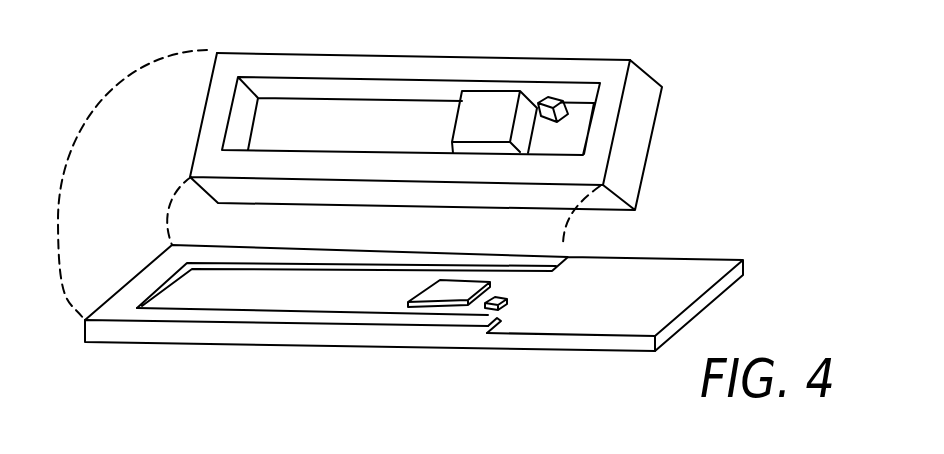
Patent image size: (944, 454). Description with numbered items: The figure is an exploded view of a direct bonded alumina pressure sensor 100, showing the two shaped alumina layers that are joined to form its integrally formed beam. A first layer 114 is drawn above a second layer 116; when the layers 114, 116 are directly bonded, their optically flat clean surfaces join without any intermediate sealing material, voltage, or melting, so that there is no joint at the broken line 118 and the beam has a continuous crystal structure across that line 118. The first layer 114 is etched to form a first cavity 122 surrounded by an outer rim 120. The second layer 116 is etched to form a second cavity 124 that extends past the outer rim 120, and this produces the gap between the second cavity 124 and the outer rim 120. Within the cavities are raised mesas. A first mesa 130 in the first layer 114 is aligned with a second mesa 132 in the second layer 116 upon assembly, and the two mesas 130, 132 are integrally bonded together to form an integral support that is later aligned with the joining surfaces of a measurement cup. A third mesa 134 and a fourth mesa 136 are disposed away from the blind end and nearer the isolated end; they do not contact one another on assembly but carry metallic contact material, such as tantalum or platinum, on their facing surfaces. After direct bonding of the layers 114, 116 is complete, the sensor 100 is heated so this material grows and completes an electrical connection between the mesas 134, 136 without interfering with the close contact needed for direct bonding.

The sensor 100 is at (693, 194).
The first layer 114 is at (393, 107).
The second layer 116 is at (404, 194).
The broken line 118 is at (367, 53).
The outer rim 120 is at (280, 63).
The first cavity 122 is at (380, 133).
The second cavity 124 is at (281, 296).
The first mesa 130 is at (477, 107).
The second mesa 132 is at (443, 293).
The third mesa 134 is at (545, 103).
The fourth mesa 136 is at (502, 303).